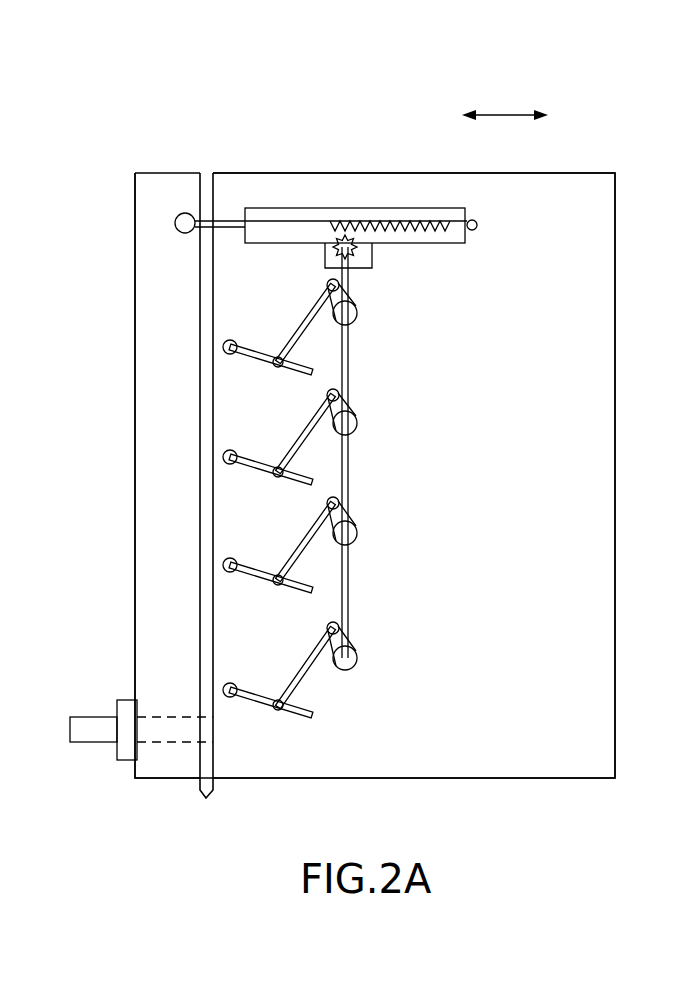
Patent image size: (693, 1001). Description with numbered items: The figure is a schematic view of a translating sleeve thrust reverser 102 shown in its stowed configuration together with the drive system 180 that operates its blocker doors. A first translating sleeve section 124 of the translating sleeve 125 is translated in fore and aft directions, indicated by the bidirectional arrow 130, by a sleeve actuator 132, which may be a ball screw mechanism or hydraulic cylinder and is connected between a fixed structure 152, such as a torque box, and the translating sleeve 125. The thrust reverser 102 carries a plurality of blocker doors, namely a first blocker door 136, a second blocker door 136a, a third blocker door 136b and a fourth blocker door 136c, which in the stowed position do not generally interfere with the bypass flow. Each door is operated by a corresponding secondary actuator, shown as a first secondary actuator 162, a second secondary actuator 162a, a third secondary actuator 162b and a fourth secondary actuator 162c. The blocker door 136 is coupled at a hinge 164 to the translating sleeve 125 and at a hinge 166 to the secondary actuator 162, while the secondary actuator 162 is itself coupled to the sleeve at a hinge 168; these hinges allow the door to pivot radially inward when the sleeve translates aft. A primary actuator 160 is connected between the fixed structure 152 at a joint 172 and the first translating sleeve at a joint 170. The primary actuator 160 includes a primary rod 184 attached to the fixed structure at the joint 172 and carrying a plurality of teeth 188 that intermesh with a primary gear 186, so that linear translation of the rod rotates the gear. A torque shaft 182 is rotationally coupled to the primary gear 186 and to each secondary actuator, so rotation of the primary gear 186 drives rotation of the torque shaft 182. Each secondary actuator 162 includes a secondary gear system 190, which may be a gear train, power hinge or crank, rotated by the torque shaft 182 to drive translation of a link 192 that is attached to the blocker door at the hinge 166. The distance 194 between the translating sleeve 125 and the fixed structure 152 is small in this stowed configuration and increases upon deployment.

The thrust reverser 102 is at (276, 133).
The first translating sleeve section 124 is at (588, 482).
The translating sleeve 125 is at (588, 327).
The bidirectional arrow 130 is at (508, 112).
The sleeve actuator 132 is at (105, 762).
The blocker door 136 is at (242, 703).
The second blocker door 136a is at (254, 575).
The third blocker door 136b is at (248, 468).
The fourth blocker door 136c is at (248, 358).
The fixed structure 152 is at (190, 482).
The primary actuator 160 is at (334, 194).
The secondary actuator 162 is at (384, 637).
The second secondary actuator 162a is at (385, 540).
The third secondary actuator 162b is at (390, 430).
The fourth secondary actuator 162c is at (378, 328).
The hinge 164 is at (226, 688).
The hinge 166 is at (282, 712).
The hinge 168 is at (340, 672).
The joint 170 is at (474, 218).
The joint 172 is at (184, 213).
The drive system 180 is at (514, 249).
The torque shaft 182 is at (349, 273).
The primary rod 184 is at (240, 219).
The primary gear 186 is at (336, 252).
The teeth 188 is at (435, 245).
The secondary gear system 190 is at (357, 664).
The link 192 is at (310, 665).
The distance 194 is at (210, 503).